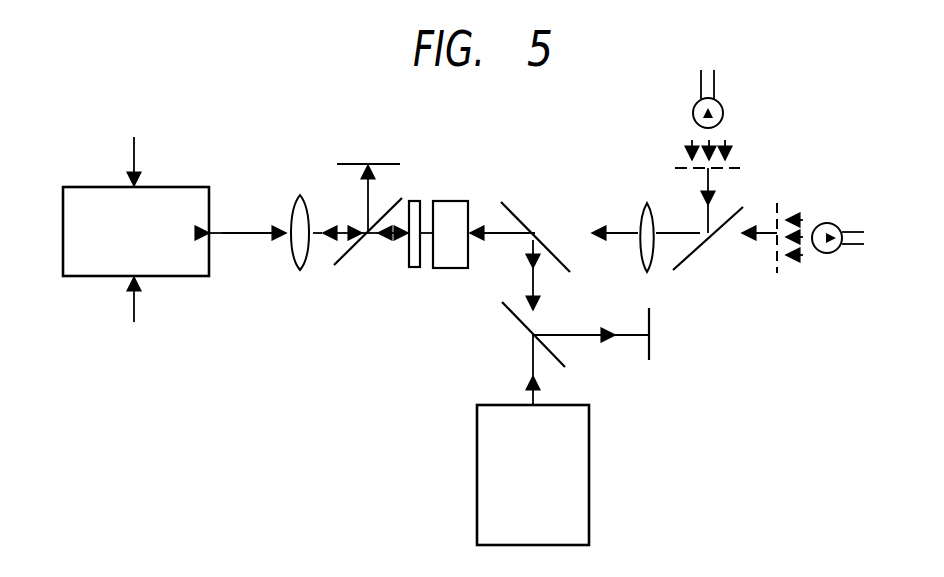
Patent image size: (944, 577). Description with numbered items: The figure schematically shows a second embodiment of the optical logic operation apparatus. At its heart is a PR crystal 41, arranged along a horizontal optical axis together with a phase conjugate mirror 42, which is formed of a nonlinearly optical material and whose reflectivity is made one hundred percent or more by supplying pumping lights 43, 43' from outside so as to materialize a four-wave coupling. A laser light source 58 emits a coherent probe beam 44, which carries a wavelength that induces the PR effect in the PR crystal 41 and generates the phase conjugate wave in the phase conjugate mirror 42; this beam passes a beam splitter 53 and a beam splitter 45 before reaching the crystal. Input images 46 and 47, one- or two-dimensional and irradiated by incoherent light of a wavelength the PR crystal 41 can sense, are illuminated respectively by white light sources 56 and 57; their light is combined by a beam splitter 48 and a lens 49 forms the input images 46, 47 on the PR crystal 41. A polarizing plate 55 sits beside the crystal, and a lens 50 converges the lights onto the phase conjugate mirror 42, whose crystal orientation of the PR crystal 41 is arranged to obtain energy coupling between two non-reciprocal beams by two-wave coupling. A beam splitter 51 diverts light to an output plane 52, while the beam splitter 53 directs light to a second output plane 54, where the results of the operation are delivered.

The PR crystal 41 is at (452, 200).
The phase conjugate mirror 42 is at (187, 187).
The pumping light 43 is at (134, 148).
The pumping light 43' is at (136, 315).
The probe beam 44 is at (530, 359).
The beam splitter 45 is at (515, 212).
The input image 46 is at (775, 276).
The input image 47 is at (735, 168).
The beam splitter 48 is at (683, 266).
The lens 49 is at (641, 210).
The lens 50 is at (292, 200).
The beam splitter 51 is at (349, 258).
The output plane 52 is at (385, 164).
The beam splitter 53 is at (565, 362).
The output plane 54 is at (652, 355).
The polarizing plate 55 is at (412, 268).
The white light source 56 is at (838, 255).
The white light source 57 is at (723, 103).
The laser light source 58 is at (590, 497).